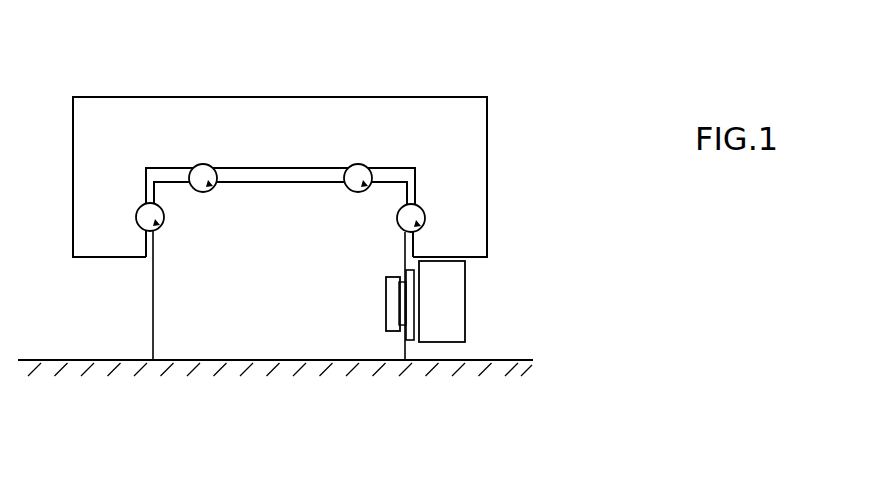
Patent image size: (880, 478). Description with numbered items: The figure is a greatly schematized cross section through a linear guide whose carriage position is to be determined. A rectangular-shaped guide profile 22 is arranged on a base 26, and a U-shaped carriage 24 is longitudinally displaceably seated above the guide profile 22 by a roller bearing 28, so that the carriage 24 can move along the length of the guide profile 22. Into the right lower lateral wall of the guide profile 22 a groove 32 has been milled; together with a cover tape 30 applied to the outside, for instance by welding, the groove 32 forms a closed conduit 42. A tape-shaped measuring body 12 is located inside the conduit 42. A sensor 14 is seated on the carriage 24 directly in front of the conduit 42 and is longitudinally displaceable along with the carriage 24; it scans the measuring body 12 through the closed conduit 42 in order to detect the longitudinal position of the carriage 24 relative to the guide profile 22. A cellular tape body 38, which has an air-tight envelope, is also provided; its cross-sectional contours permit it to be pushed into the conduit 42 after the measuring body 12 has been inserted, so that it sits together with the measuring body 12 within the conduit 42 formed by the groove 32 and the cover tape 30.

The measuring body 12 is at (400, 310).
The sensor 14 is at (456, 272).
The guide profile 22 is at (207, 337).
The carriage 24 is at (288, 104).
The base 26 is at (512, 357).
The roller bearing 28 is at (137, 203).
The cover tape 30 is at (408, 290).
The groove 32 is at (381, 319).
The cellular tape body 38 is at (392, 323).
The conduit 42 is at (380, 302).